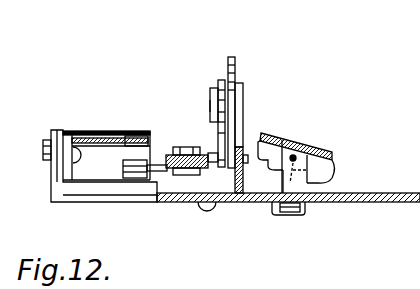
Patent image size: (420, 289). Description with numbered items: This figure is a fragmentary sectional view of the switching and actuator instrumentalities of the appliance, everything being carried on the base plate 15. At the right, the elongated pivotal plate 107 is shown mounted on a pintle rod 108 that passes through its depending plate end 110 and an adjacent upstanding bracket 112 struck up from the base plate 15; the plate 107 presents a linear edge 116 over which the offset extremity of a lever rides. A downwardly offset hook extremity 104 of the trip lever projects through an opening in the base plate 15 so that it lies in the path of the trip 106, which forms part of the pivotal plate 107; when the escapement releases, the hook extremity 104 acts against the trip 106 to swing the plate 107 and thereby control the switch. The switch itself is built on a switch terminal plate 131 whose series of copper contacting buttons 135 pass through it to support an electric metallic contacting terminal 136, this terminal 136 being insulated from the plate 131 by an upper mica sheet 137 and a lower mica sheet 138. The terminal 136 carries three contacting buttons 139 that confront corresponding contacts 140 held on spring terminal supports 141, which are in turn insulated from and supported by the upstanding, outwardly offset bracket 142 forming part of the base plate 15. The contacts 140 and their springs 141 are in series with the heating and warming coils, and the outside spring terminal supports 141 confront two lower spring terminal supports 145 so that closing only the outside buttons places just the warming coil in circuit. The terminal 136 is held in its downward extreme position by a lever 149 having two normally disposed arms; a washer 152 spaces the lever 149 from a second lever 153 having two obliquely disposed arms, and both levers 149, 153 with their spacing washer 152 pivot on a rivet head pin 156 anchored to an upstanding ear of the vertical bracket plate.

The base plate 15 is at (363, 202).
The hook extremity 104 is at (298, 215).
The trip 106 is at (281, 233).
The pivotal plate 107 is at (317, 146).
The pintle rod 108 is at (294, 155).
The depending plate end 110 is at (335, 163).
The upstanding bracket 112 is at (308, 185).
The linear edge 116 is at (262, 133).
The switch terminal plate 131 is at (199, 148).
The copper contacting buttons 135 is at (173, 147).
The contacting terminal 136 is at (166, 170).
The upper mica sheet 137 is at (167, 150).
The lower mica sheet 138 is at (190, 176).
The contacting buttons 139 is at (127, 180).
The contacts 140 is at (137, 136).
The spring terminal supports 141 is at (96, 131).
The bracket 142 is at (62, 175).
The lower spring terminal supports 145 is at (95, 185).
The lever 149 is at (213, 88).
The washer 152 is at (226, 102).
The lever 153 is at (236, 74).
The rivet head pin 156 is at (211, 105).